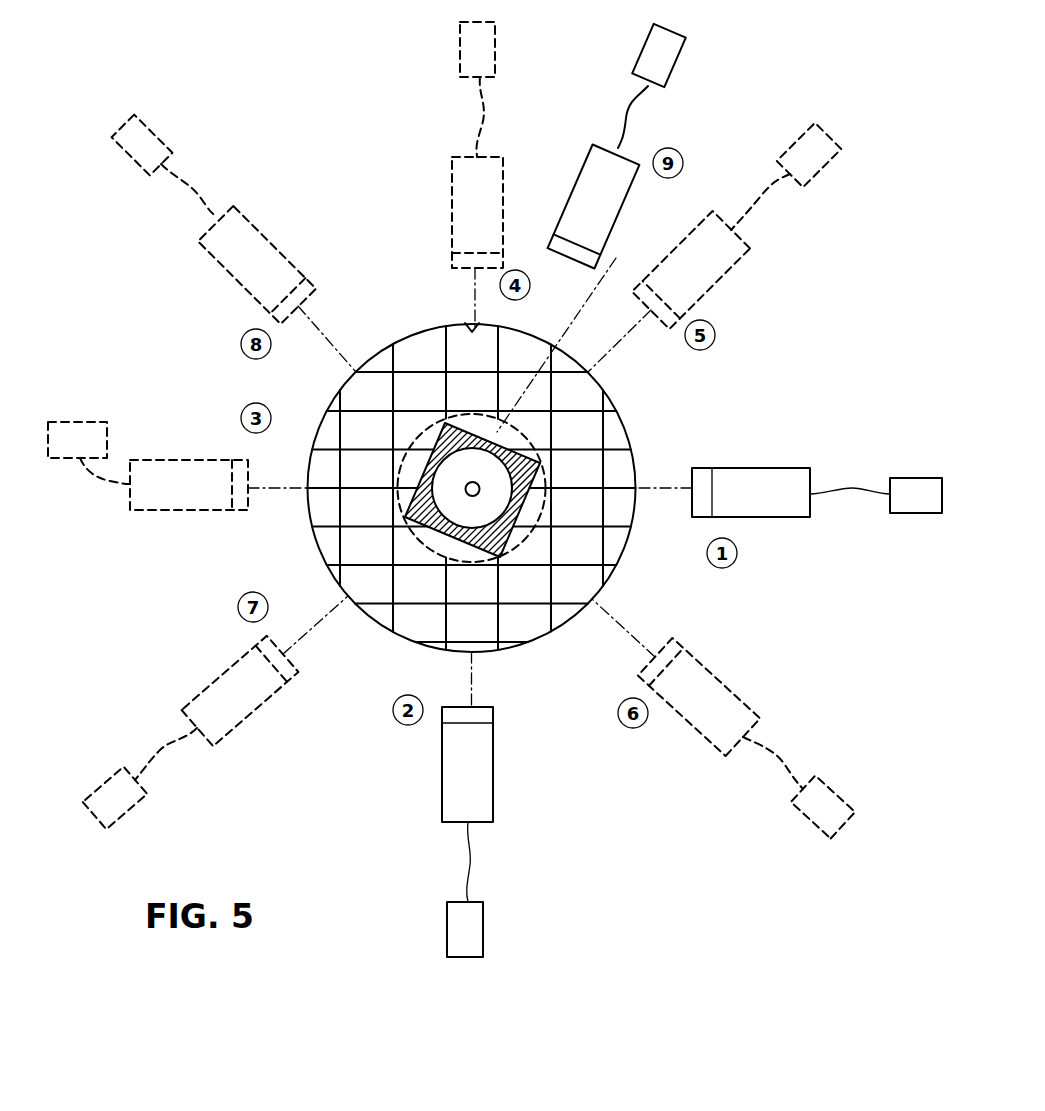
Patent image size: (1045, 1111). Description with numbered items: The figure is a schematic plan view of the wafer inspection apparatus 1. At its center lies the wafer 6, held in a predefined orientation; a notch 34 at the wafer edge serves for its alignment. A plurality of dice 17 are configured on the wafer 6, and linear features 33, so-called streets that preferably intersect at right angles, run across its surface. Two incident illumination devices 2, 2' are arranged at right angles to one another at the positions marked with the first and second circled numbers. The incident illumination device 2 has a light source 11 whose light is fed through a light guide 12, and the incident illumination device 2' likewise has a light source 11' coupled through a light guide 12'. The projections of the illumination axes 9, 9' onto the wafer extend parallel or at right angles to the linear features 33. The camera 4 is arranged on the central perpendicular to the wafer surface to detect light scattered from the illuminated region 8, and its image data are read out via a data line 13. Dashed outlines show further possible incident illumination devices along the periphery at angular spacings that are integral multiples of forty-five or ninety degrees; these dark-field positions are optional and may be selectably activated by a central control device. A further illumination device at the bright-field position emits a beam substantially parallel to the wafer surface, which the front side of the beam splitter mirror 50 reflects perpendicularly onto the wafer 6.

The wafer inspection apparatus 1 is at (440, 405).
The incident illumination device 2 is at (751, 451).
The incident illumination device 2' is at (505, 764).
The camera 4 is at (497, 502).
The wafer 6 is at (592, 376).
The illuminated region 8 is at (455, 418).
The illumination axis 9 is at (664, 534).
The illumination axis 9' is at (513, 679).
The light source 11 is at (916, 458).
The light source 11' is at (509, 929).
The light guide 12 is at (850, 448).
The light guide 12' is at (519, 862).
The data line 13 is at (476, 492).
The dice 17 is at (415, 383).
The linear features 33 is at (606, 444).
The notch 34 is at (472, 328).
The beam splitter mirror 50 is at (397, 507).